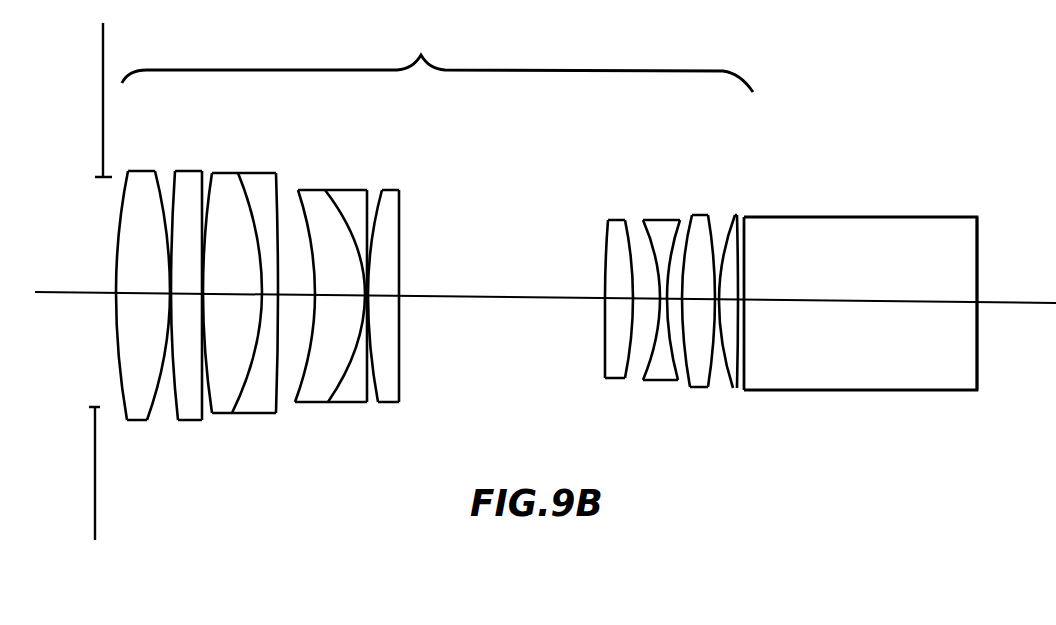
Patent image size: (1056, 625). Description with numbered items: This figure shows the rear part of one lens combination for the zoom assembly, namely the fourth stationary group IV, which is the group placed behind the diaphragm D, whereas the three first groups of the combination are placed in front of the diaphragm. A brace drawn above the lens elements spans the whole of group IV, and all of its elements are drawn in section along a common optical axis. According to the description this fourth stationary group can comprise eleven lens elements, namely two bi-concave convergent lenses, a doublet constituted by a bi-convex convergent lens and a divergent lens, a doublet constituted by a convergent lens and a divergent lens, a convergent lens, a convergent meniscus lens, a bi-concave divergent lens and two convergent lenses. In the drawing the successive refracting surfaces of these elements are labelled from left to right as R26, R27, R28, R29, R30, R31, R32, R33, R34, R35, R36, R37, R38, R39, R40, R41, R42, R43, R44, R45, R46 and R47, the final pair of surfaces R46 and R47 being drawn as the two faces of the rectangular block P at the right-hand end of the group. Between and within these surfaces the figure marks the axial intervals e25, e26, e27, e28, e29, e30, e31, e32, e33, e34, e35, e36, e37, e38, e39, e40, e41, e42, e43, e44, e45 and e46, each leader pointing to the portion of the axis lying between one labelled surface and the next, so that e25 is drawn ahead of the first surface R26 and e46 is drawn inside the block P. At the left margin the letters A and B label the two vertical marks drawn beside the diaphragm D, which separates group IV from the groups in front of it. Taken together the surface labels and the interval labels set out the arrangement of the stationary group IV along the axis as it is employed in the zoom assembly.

The lens surface R26 is at (128, 416).
The lens surface R27 is at (160, 172).
The lens surface R28 is at (176, 171).
The lens surface R29 is at (204, 173).
The lens surface R30 is at (222, 174).
The lens surface R31 is at (246, 201).
The lens surface R32 is at (281, 187).
The lens surface R33 is at (295, 403).
The lens surface R34 is at (335, 393).
The lens surface R35 is at (370, 402).
The lens surface R36 is at (381, 190).
The lens surface R37 is at (402, 206).
The lens surface R38 is at (607, 226).
The lens surface R39 is at (629, 220).
The lens surface R40 is at (645, 220).
The lens surface R41 is at (681, 220).
The lens surface R42 is at (693, 216).
The lens surface R43 is at (722, 218).
The lens surface R44 is at (738, 242).
The lens surface R45 is at (745, 373).
The plate surface R46 is at (746, 360).
The plate surface R47 is at (976, 232).
The axial spacing e25 is at (69, 293).
The axial thickness e26 is at (133, 292).
The axial spacing e27 is at (165, 296).
The axial thickness e28 is at (165, 336).
The axial spacing e29 is at (210, 294).
The axial thickness e30 is at (221, 293).
The axial spacing e31 is at (271, 292).
The axial thickness e32 is at (287, 295).
The axial thickness e33 is at (335, 296).
The axial spacing e34 is at (367, 295).
The axial thickness e35 is at (367, 295).
The axial thickness e36 is at (385, 295).
The axial spacing e37 is at (512, 299).
The axial thickness e38 is at (622, 300).
The axial spacing e39 is at (633, 297).
The axial thickness e40 is at (660, 298).
The axial spacing e41 is at (685, 302).
The axial thickness e42 is at (700, 302).
The axial thickness e43 is at (740, 279).
The axial spacing e44 is at (743, 322).
The axial thickness e45 is at (743, 308).
The axial thickness e46 is at (880, 303).
The fourth stationary group IV is at (423, 36).
The reference plane A is at (103, 62).
The reference plane B is at (95, 487).
The diaphragm D is at (96, 405).
The plane parallel plate P is at (902, 378).